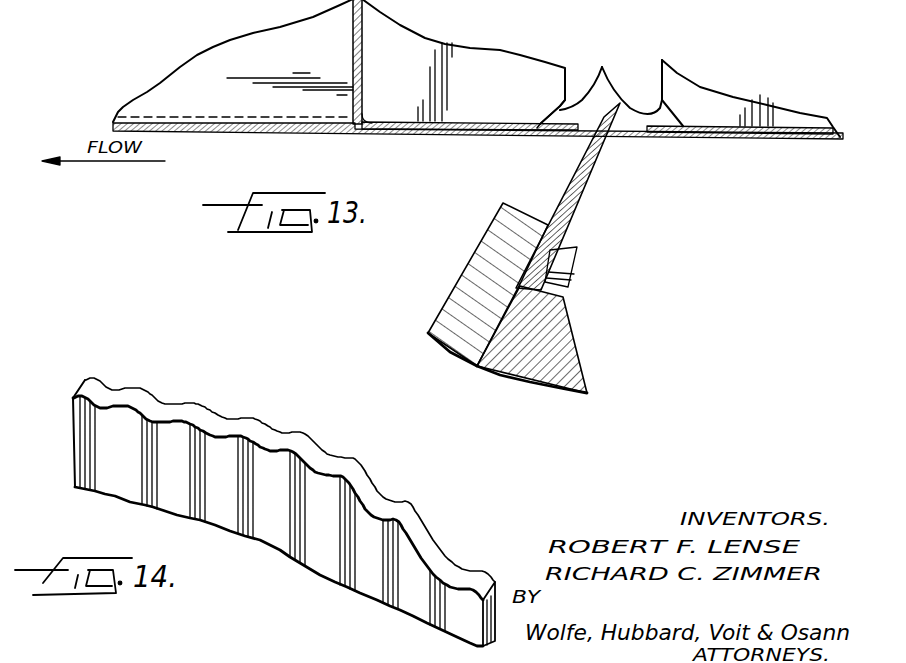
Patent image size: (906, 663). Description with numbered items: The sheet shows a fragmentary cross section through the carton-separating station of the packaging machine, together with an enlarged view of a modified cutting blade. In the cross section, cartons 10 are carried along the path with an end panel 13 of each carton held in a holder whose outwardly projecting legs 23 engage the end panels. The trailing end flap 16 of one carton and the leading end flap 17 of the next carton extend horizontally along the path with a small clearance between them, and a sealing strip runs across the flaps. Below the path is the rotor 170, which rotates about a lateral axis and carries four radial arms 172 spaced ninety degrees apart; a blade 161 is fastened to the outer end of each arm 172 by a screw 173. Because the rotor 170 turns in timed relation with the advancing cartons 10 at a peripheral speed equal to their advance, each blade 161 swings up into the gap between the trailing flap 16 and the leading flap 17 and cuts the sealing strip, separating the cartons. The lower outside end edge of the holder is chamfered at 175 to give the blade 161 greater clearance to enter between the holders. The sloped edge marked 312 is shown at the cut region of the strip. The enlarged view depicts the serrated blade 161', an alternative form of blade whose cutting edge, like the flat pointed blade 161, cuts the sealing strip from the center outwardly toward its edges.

In FIG. 13, the carton 10 is at (157, 88).
In FIG. 13, the end panel 13 is at (353, 62).
In FIG. 13, the end flap 16 is at (508, 125).
In FIG. 13, the end flap 17 is at (710, 126).
In FIG. 13, the leg 23 is at (463, 52).
In FIG. 13, the chamfer 175 is at (611, 77).
In FIG. 13, the slot edge 312 is at (590, 124).
In FIG. 13, the blade 161 is at (587, 196).
In FIG. 13, the screw 173 is at (575, 268).
In FIG. 13, the rotor 170 is at (428, 316).
In FIG. 13, the arm 172 is at (570, 350).
In FIG. 14, the serrated blade 161' is at (284, 488).